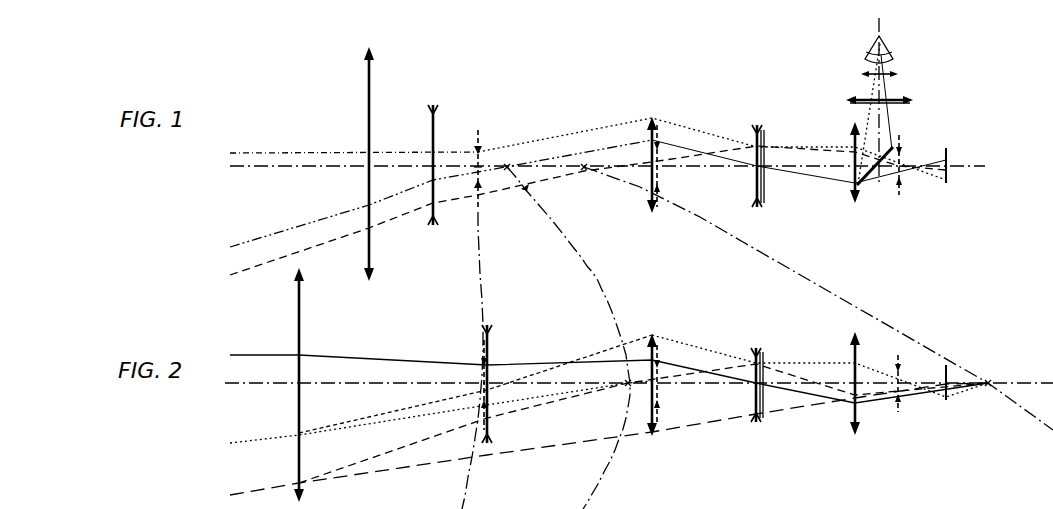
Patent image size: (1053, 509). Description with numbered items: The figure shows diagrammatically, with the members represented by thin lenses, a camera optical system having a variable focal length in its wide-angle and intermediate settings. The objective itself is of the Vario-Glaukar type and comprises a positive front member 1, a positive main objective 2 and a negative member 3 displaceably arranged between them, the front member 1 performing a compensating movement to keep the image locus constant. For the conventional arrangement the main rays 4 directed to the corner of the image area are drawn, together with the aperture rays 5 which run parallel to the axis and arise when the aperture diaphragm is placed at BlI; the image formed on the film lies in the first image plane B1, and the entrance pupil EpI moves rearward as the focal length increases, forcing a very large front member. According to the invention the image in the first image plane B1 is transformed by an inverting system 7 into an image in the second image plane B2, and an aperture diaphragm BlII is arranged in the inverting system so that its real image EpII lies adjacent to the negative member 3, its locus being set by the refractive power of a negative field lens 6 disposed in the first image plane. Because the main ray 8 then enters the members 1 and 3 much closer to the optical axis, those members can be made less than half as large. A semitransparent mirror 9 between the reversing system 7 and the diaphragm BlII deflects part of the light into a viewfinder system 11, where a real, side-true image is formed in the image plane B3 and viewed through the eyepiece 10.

In FIG. 1, the positive front member 1 is at (367, 91).
In FIG. 2, the positive front member 1 is at (297, 321).
In FIG. 1, the positive main objective 2 is at (650, 205).
In FIG. 2, the positive main objective 2 is at (650, 420).
In FIG. 1, the displaceable negative member 3 is at (431, 114).
In FIG. 2, the displaceable negative member 3 is at (490, 338).
In FIG. 1, the main rays 4 is at (578, 215).
In FIG. 2, the main rays 4 is at (599, 434).
In FIG. 1, the aperture rays 5 is at (579, 149).
In FIG. 2, the aperture rays 5 is at (600, 374).
In FIG. 1, the negative field lens 6 is at (755, 198).
In FIG. 2, the negative field lens 6 is at (754, 420).
In FIG. 1, the inverting system 7 is at (852, 199).
In FIG. 2, the inverting system 7 is at (852, 422).
In FIG. 1, the main ray 8 is at (578, 198).
In FIG. 2, the main ray 8 is at (599, 394).
In FIG. 1, the semitransparent mirror 9 is at (872, 180).
In FIG. 1, the eyepiece 10 is at (893, 72).
In FIG. 1, the viewfinder system 11 is at (868, 98).
In FIG. 1, the first image plane B1 is at (764, 192).
In FIG. 2, the first image plane B1 is at (763, 412).
In FIG. 1, the second image plane B2 is at (948, 180).
In FIG. 2, the second image plane B2 is at (948, 397).
In FIG. 1, the viewfinder image plane B3 is at (900, 105).
In FIG. 1, the aperture diaphragm position of the existing objective BlI is at (659, 193).
In FIG. 2, the aperture diaphragm position of the existing objective BlI is at (659, 419).
In FIG. 1, the aperture diaphragm BlII is at (474, 162).
In FIG. 2, the aperture diaphragm BlII is at (462, 383).
In FIG. 1, the entrance pupil EpI is at (589, 158).
In FIG. 2, the entrance pupil EpI is at (990, 382).
In FIG. 1, the real image of the diaphragm EpII is at (507, 168).
In FIG. 2, the real image of the diaphragm EpII is at (627, 381).